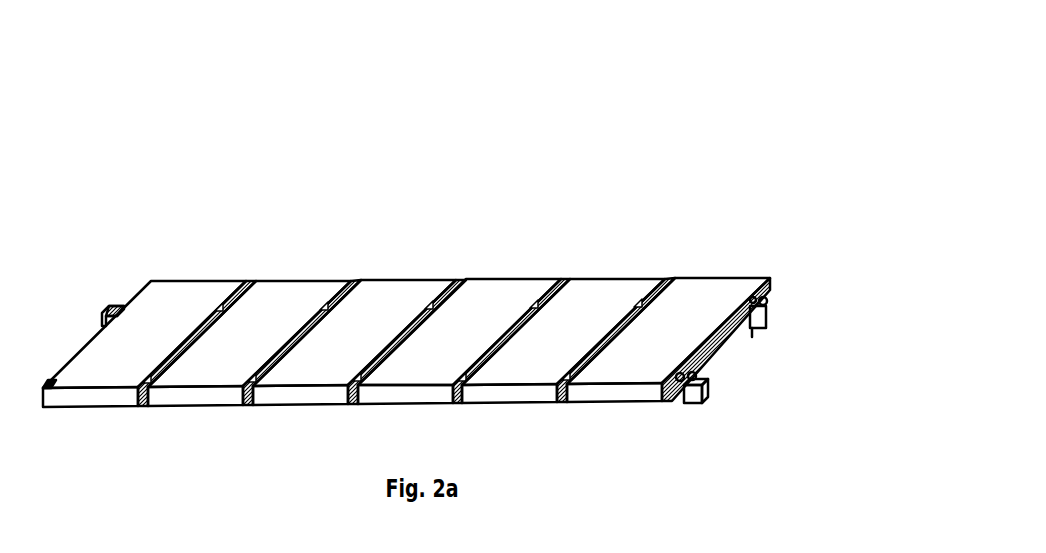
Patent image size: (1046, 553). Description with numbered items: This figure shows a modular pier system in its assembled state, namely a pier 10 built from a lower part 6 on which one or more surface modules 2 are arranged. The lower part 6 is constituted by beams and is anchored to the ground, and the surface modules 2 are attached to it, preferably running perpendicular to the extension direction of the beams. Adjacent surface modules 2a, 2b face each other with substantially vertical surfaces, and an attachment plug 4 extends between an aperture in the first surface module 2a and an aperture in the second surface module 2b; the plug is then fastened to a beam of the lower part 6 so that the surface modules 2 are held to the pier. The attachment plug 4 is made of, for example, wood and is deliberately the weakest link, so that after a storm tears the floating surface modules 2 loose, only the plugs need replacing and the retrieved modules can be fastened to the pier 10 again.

The pier 10 is at (548, 108).
The surface module 2 is at (163, 310).
The first surface module 2a is at (249, 343).
The second surface module 2b is at (354, 342).
The attachment plug 4 is at (683, 387).
The lower part 6 is at (700, 393).